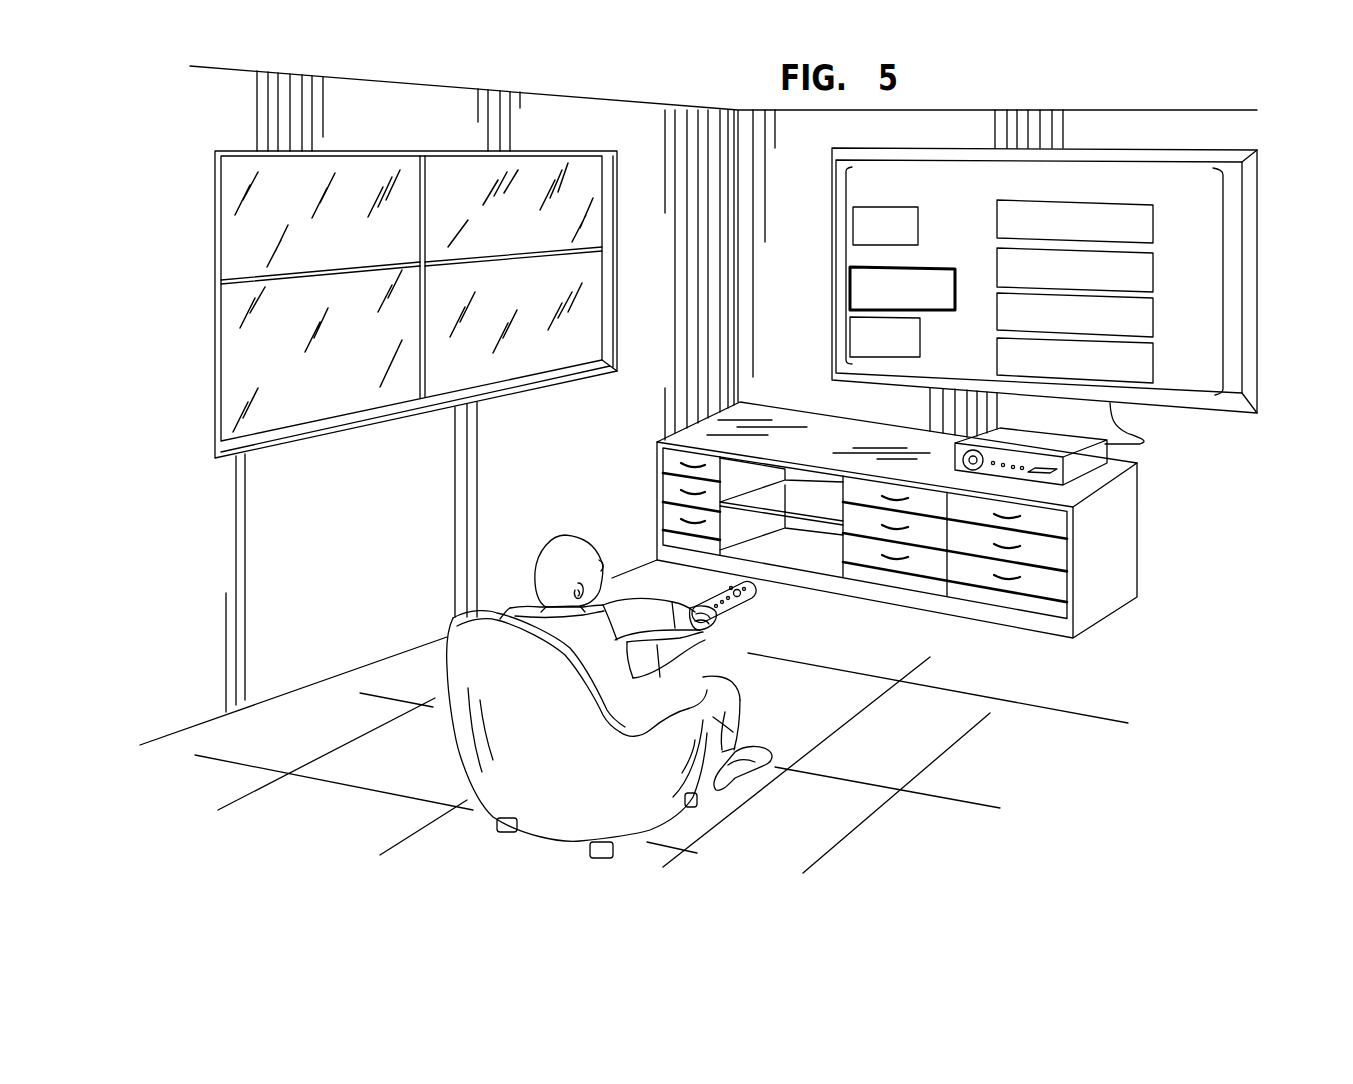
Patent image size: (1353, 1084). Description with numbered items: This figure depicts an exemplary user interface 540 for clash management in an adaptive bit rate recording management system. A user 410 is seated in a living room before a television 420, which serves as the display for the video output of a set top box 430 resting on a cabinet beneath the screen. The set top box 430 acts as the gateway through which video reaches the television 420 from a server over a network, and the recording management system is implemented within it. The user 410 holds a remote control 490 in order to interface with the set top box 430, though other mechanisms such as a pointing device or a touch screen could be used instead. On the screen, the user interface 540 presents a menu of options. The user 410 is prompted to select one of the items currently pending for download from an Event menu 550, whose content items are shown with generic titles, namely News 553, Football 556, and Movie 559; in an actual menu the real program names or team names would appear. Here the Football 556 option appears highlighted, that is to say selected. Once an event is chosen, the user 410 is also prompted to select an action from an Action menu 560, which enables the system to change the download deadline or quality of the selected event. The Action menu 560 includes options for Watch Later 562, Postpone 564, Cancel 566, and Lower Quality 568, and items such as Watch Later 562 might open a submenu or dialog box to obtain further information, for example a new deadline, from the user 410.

The user 410 is at (555, 550).
The television 420 is at (1135, 159).
The set top box 430 is at (1087, 465).
The remote control 490 is at (750, 607).
The user interface 540 is at (975, 170).
The Event menu 550 is at (843, 270).
The News 553 is at (918, 225).
The Football 556 is at (850, 290).
The Movie 559 is at (920, 337).
The Action menu 560 is at (1225, 279).
The Watch Later 562 is at (1153, 225).
The Postpone 564 is at (1153, 272).
The Cancel 566 is at (1153, 320).
The Lower Quality 568 is at (1153, 363).